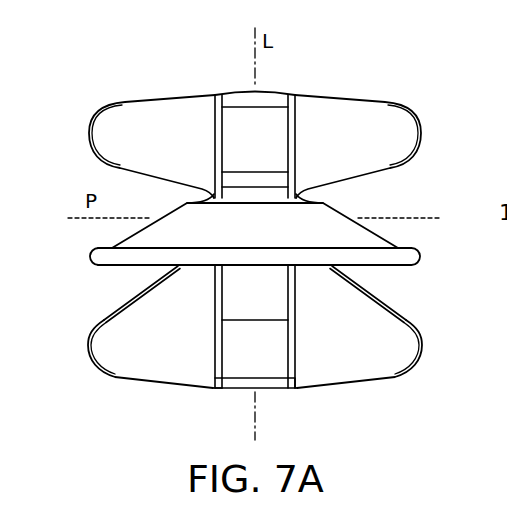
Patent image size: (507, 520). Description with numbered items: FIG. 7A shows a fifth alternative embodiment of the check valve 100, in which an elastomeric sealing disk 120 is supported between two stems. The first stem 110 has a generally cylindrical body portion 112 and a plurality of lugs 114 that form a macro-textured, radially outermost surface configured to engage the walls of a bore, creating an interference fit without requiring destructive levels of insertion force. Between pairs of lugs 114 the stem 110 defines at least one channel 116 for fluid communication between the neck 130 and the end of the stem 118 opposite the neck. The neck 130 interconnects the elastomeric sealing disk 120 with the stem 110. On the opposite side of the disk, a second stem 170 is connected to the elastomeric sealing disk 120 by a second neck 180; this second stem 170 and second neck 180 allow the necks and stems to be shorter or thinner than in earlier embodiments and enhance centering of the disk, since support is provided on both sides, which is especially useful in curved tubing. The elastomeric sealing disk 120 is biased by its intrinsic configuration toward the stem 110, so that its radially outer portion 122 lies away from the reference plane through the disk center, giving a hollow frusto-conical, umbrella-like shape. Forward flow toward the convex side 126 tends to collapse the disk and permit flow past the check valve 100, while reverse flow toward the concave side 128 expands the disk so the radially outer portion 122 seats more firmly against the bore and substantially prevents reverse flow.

The check valve 100 is at (421, 98).
The stem 110 is at (385, 384).
The body portion 112 is at (262, 392).
The lugs 114 is at (400, 313).
The channel 116 is at (293, 389).
The end of the stem 118 is at (216, 389).
The elastomeric sealing disk 120 is at (403, 247).
The radially outer portion 122 is at (418, 258).
The convex side 126 is at (112, 246).
The concave side 128 is at (109, 266).
The neck 130 is at (180, 268).
The second stem 170 is at (216, 92).
The second neck 180 is at (196, 200).